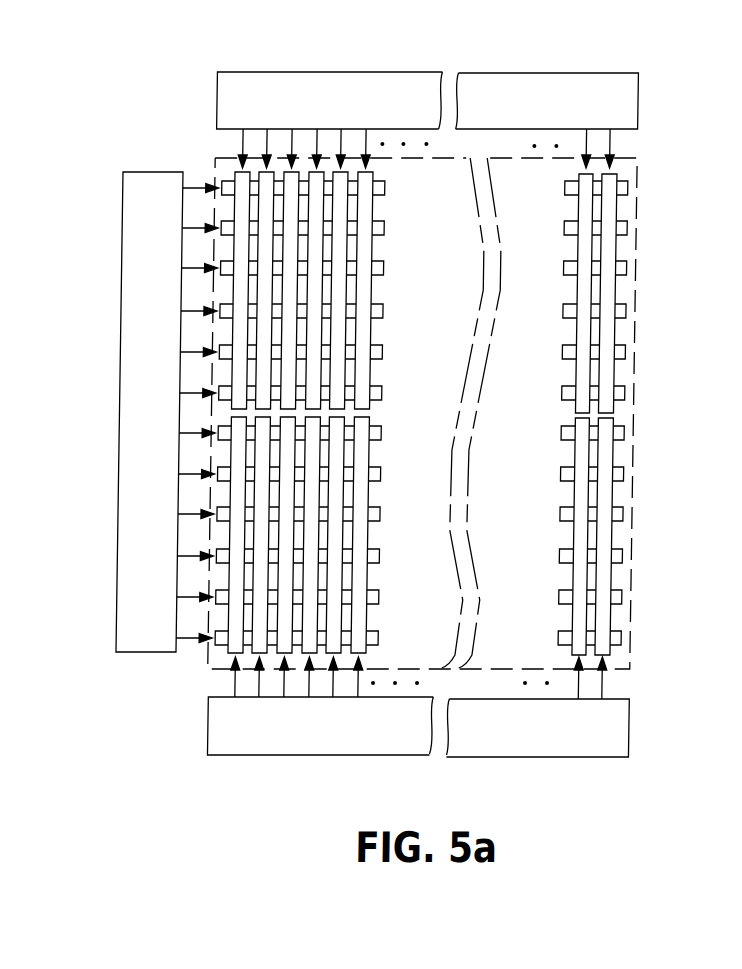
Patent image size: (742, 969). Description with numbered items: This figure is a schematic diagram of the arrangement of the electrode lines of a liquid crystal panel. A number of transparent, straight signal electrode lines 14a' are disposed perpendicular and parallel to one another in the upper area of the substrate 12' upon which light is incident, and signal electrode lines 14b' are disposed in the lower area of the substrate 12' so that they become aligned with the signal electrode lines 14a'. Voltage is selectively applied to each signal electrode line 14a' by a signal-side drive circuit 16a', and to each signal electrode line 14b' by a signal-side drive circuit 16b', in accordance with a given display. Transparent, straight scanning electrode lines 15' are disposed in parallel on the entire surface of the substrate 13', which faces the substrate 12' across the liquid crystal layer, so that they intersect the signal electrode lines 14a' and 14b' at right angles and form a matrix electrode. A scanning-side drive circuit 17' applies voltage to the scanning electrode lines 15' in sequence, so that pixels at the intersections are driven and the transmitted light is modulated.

The signal-side drive circuit 16a' is at (427, 101).
The signal-side drive circuit 16b' is at (418, 727).
The scanning-side drive circuit 17' is at (167, 432).
The signal electrode lines 14a' is at (383, 270).
The signal electrode lines 14b' is at (420, 536).
The scanning electrode lines 15' is at (421, 413).
The substrate 12' is at (475, 413).
The substrate 13' is at (475, 413).